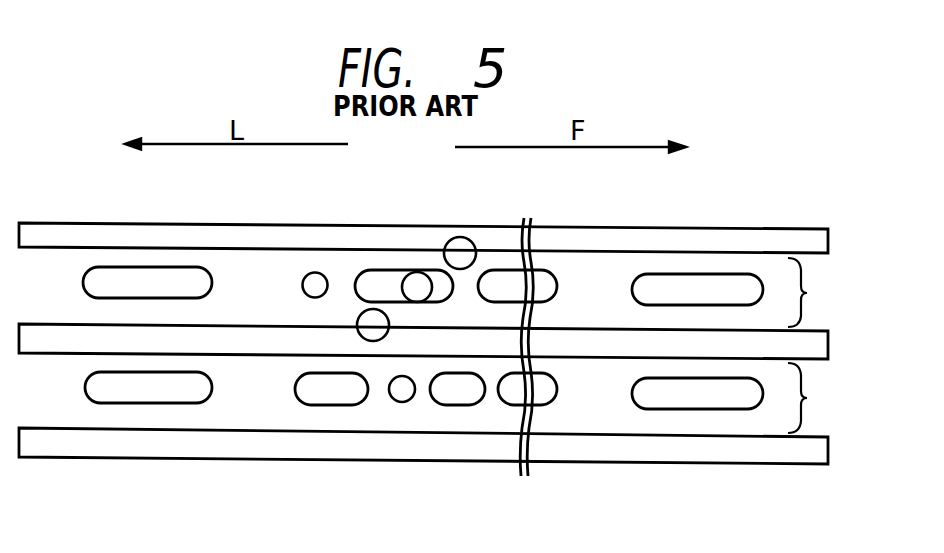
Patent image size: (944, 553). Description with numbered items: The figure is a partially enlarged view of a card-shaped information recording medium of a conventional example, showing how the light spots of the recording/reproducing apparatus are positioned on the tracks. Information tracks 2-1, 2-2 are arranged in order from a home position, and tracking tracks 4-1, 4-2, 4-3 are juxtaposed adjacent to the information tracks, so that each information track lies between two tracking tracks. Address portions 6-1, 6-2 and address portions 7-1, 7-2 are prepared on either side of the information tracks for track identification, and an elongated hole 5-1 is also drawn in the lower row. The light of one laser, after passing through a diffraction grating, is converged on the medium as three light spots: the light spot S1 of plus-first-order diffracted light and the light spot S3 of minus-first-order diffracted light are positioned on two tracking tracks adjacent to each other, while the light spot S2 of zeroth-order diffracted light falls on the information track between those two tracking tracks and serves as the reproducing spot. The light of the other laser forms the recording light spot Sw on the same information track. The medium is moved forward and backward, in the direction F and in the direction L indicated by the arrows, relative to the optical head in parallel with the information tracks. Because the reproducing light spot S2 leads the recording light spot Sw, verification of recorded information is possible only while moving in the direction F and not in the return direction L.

The information track 2-1 is at (821, 398).
The information track 2-2 is at (821, 292).
The tracking track 4-1 is at (807, 453).
The tracking track 4-2 is at (752, 345).
The tracking track 4-3 is at (790, 238).
The elongated hole 5-1 is at (315, 405).
The address portion 6-1 is at (113, 403).
The address portion 6-2 is at (110, 275).
The address portion 7-1 is at (655, 409).
The address portion 7-2 is at (642, 274).
The light spot S1 is at (380, 340).
The light spot S2 is at (398, 280).
The light spot S3 is at (467, 240).
The light spot Sw is at (317, 272).